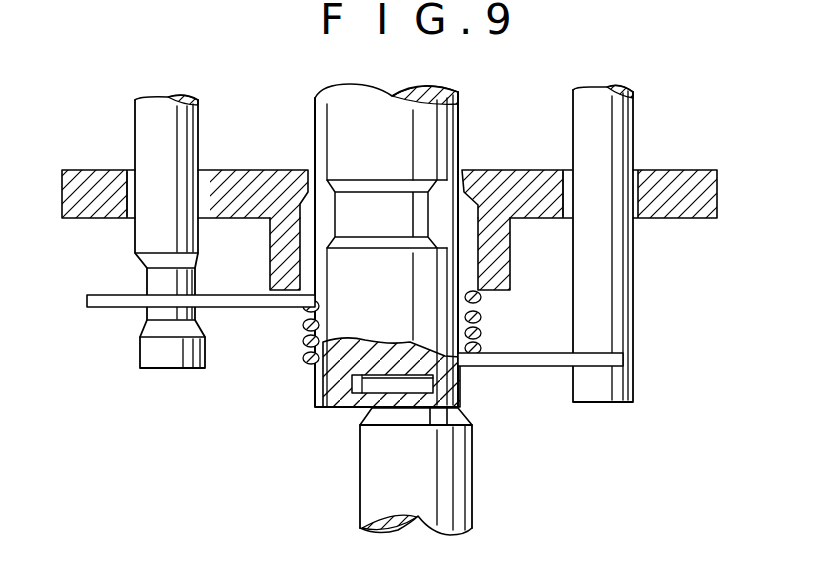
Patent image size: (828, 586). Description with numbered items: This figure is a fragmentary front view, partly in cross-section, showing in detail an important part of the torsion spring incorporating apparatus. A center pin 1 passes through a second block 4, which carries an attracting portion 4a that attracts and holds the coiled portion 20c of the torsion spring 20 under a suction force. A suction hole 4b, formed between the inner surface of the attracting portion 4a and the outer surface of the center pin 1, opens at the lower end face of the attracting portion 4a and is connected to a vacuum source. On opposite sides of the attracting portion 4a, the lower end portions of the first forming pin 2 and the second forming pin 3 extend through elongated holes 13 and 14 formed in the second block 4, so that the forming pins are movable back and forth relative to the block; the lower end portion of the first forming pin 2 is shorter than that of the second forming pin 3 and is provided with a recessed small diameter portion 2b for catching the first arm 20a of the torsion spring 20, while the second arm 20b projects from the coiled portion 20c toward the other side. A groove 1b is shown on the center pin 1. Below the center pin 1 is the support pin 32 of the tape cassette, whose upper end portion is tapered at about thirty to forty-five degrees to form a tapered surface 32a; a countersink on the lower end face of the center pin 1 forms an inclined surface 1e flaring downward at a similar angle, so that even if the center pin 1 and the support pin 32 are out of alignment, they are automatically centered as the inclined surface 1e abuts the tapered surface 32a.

The center pin 1 is at (447, 122).
The annular groove of body 1b is at (338, 203).
The inclined surface 1e is at (356, 409).
The first forming pin 2 is at (196, 126).
The recessed small diameter portion 2b is at (148, 310).
The second forming pin 3 is at (620, 112).
The second block 4 is at (672, 170).
The attracting portion 4a is at (500, 250).
The suction hole 4b is at (272, 247).
The elongated hole 13 is at (134, 176).
The elongated hole 14 is at (568, 172).
The torsion spring 20 is at (296, 349).
The first arm 20a is at (97, 295).
The second arm 20b is at (633, 360).
The coiled portion 20c is at (483, 331).
The support pin 32 is at (443, 498).
The tapered surface 32a is at (470, 425).